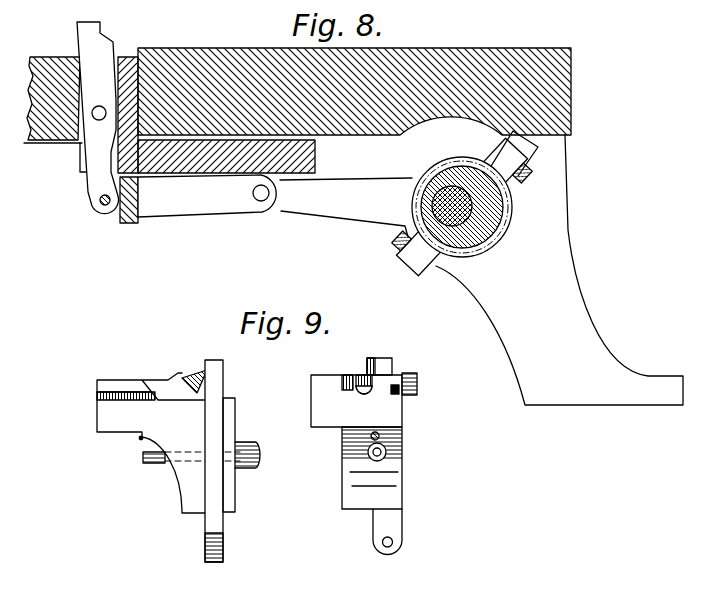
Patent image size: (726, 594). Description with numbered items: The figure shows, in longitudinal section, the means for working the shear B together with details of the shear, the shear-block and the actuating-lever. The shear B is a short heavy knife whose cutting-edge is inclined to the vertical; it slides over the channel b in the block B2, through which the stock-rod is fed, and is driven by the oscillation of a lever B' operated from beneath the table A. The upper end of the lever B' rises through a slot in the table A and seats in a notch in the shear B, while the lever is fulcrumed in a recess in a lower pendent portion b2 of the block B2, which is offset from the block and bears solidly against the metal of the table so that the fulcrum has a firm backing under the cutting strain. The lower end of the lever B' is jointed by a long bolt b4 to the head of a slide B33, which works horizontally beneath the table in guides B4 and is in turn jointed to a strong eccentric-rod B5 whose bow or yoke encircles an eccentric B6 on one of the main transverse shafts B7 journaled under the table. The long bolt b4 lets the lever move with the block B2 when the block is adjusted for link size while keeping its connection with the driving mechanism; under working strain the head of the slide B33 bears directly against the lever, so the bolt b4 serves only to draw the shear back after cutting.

In FIG. 8, the table A is at (354, 91).
In FIG. 9, the shear B is at (302, 370).
In FIG. 8, the lever B' is at (97, 118).
In FIG. 9, the lever B' is at (319, 461).
In FIG. 8, the block B2 is at (36, 143).
In FIG. 9, the block B2 is at (249, 433).
In FIG. 8, the slide B33 is at (195, 205).
In FIG. 8, the guides B4 is at (315, 160).
In FIG. 8, the eccentric-rod B5 is at (350, 204).
In FIG. 8, the eccentric B6 is at (463, 203).
In FIG. 8, the main transverse shaft B7 is at (452, 206).
In FIG. 9, the channel b is at (358, 376).
In FIG. 9, the lower pendent portion b2 is at (267, 475).
In FIG. 8, the long bolt b4 is at (100, 203).